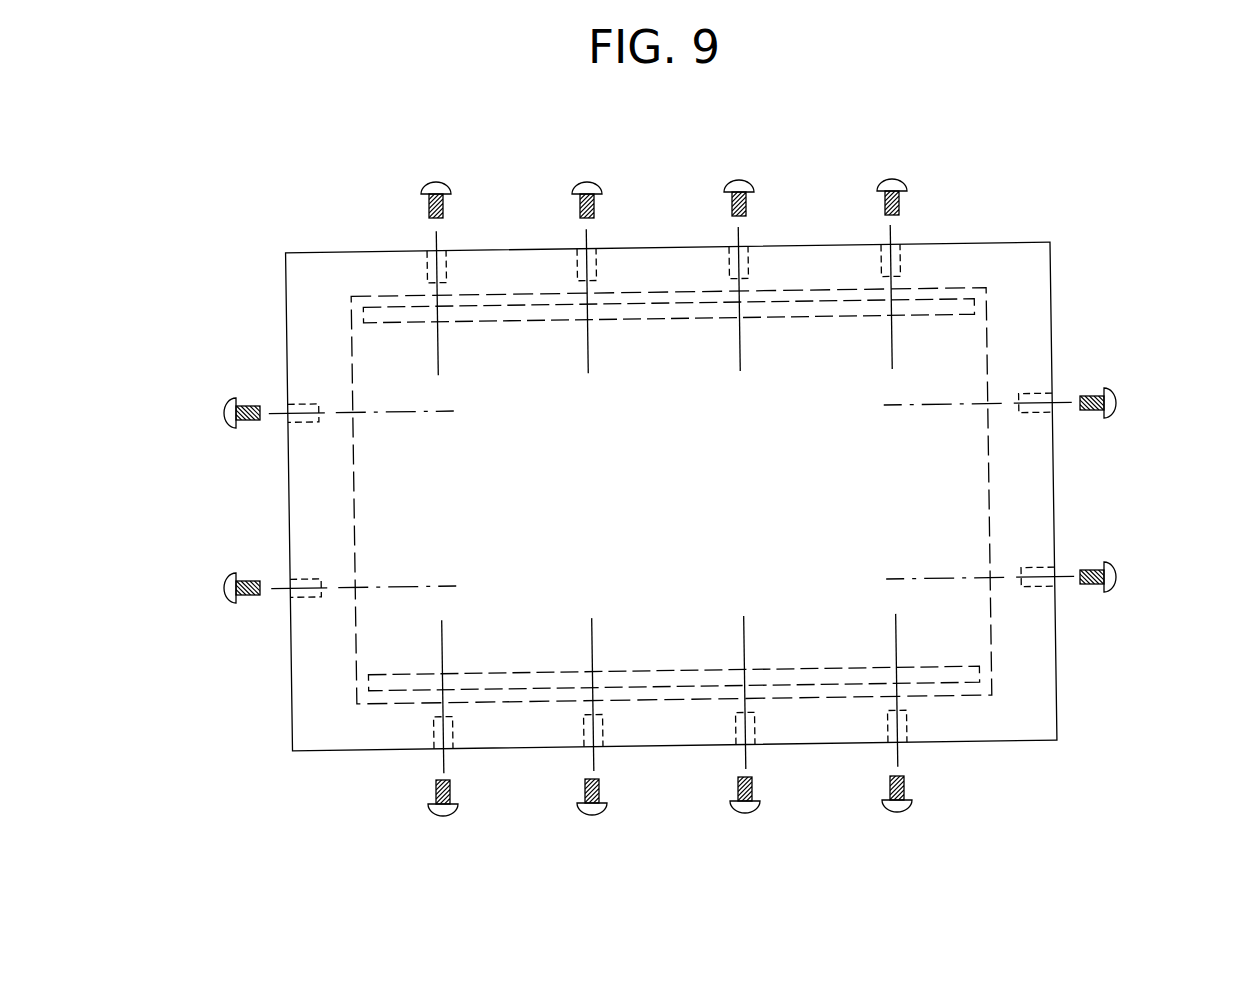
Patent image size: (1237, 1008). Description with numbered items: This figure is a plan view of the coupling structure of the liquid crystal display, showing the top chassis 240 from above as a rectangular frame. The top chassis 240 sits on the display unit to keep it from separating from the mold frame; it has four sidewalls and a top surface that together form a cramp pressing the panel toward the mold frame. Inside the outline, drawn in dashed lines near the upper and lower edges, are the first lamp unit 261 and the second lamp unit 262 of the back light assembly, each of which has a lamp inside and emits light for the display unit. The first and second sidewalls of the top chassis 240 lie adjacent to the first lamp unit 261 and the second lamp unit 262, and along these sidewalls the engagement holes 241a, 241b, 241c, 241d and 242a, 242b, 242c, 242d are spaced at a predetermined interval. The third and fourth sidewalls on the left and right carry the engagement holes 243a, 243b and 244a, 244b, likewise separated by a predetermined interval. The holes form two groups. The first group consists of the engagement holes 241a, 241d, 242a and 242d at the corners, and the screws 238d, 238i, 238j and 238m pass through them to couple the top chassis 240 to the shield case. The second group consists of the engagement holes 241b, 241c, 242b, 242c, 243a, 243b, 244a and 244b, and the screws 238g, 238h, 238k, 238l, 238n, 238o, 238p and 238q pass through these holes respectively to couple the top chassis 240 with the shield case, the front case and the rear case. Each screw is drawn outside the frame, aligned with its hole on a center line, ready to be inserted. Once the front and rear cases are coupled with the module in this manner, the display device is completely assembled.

The top chassis 240 is at (1054, 250).
The first lamp unit 261 is at (975, 306).
The second lamp unit 262 is at (978, 680).
The engagement hole 241a is at (432, 263).
The engagement hole 241b is at (583, 262).
The engagement hole 241c is at (733, 258).
The engagement hole 241d is at (886, 256).
The engagement hole 242a is at (437, 742).
The engagement hole 242b is at (588, 740).
The engagement hole 242c is at (735, 738).
The engagement hole 242d is at (888, 735).
The engagement hole 243a is at (300, 418).
The engagement hole 243b is at (300, 593).
The engagement hole 244a is at (1040, 412).
The engagement hole 244b is at (1040, 588).
The screw 238d is at (436, 180).
The screw 238g is at (587, 180).
The screw 238h is at (739, 178).
The screw 238i is at (892, 177).
The screw 238j is at (443, 820).
The screw 238k is at (592, 818).
The screw 238l is at (745, 816).
The screw 238m is at (897, 815).
The screw 238n is at (220, 413).
The screw 238o is at (220, 588).
The screw 238p is at (1122, 403).
The screw 238q is at (1122, 577).